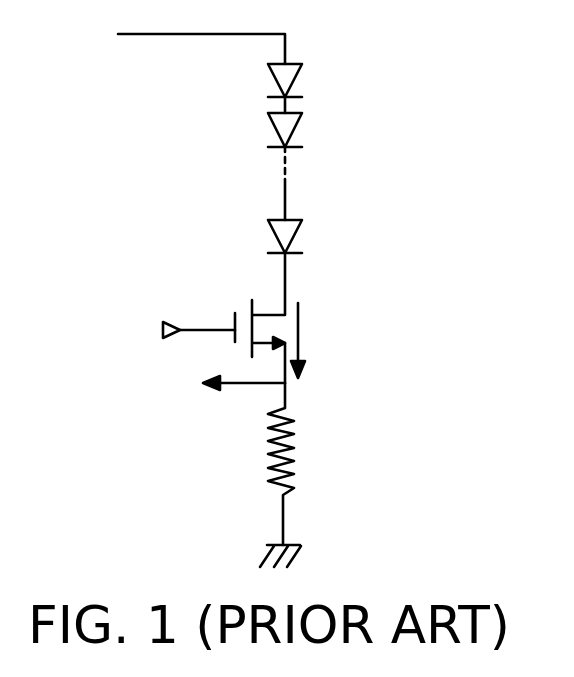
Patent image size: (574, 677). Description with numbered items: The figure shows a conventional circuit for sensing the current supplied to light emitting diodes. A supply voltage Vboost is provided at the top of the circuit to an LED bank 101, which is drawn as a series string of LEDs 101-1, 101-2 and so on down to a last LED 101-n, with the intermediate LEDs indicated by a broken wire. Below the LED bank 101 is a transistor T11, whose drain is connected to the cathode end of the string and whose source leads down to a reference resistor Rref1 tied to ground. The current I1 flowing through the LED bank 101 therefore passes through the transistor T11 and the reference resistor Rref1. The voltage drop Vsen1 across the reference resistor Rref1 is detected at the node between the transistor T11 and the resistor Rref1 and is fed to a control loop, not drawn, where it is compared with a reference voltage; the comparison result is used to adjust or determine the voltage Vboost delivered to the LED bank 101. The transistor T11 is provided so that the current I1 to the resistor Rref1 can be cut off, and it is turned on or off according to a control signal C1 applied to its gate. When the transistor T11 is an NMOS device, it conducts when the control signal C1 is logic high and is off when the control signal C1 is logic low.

The LED bank 101 is at (362, 159).
The LED 101-1 is at (330, 80).
The LED 101-2 is at (330, 130).
The LED 101-n is at (330, 238).
The transistor T11 is at (269, 305).
The control signal C1 is at (180, 328).
The current I1 is at (309, 340).
The voltage drop Vsen1 is at (206, 382).
The reference resistor Rref1 is at (316, 464).
The voltage Vboost is at (159, 40).